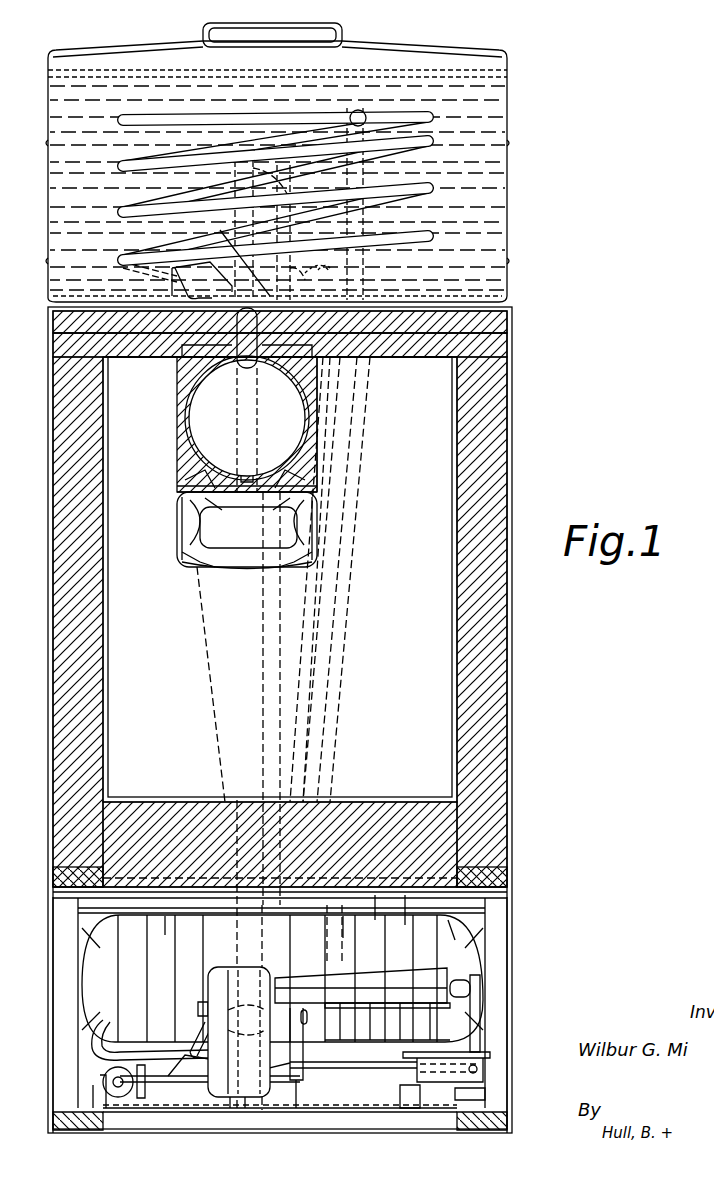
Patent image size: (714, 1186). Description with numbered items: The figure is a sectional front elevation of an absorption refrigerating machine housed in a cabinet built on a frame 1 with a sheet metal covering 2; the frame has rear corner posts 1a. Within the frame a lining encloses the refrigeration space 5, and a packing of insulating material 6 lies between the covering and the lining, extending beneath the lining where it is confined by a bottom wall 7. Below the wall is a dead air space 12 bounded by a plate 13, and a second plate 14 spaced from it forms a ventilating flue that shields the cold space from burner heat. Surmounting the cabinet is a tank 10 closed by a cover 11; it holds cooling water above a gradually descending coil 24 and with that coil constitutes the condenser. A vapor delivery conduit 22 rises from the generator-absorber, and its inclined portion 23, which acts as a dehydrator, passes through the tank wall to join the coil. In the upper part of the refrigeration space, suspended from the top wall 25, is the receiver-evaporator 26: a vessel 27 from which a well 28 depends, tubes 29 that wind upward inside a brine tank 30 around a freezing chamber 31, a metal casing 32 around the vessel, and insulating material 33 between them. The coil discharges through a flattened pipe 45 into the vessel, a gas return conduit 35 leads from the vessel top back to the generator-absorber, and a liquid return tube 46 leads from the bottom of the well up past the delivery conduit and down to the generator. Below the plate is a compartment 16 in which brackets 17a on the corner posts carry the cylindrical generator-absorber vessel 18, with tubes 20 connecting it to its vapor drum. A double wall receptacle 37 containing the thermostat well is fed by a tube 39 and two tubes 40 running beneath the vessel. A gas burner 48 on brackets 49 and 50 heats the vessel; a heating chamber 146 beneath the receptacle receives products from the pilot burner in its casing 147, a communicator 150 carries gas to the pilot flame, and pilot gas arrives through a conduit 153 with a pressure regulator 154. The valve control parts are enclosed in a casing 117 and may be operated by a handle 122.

The frame 1 is at (514, 879).
The rear corner posts 1a is at (70, 1026).
The sheet metal covering 2 is at (514, 671).
The refrigeration space 5 is at (280, 579).
The insulating material 6 is at (512, 485).
The bottom wall 7 is at (398, 924).
The tank 10 is at (509, 101).
The cover 11 is at (342, 28).
The dead air space 12 is at (339, 939).
The plate 13 is at (366, 919).
The plate 14 is at (161, 933).
The compartment 16 is at (90, 918).
The brackets 17a is at (105, 953).
The cylindrical vessel 18 is at (135, 991).
The tubes 20 is at (456, 936).
The vapor delivery conduit 22 is at (333, 738).
The inclined conduit portion 23 is at (352, 110).
The coil 24 is at (432, 192).
The top wall 25 is at (338, 400).
The receiver-evaporator 26 is at (322, 461).
The vessel 27 is at (200, 428).
The well 28 is at (182, 474).
The tubes 29 is at (310, 553).
The brine tank 30 is at (177, 529).
The freezing chamber 31 is at (248, 527).
The metal casing 32 is at (186, 407).
The insulating material 33 is at (182, 378).
The gas return conduit 35 is at (232, 241).
The double wall receptacle 37 is at (361, 985).
The tube 39 is at (485, 992).
The tubes 40 is at (375, 1067).
The pipe 45 is at (246, 436).
The liquid return tube 46 is at (305, 288).
The gas burner 48 is at (345, 1090).
The bracket 49 is at (100, 1099).
The bracket 50 is at (490, 1094).
The casing 117 is at (240, 1112).
The handle 122 is at (200, 1036).
The heating chamber 146 is at (375, 1003).
The casing 147 is at (305, 1085).
The communicator 150 is at (280, 1119).
The conduit 153 is at (410, 1112).
The pressure regulator 154 is at (490, 1081).